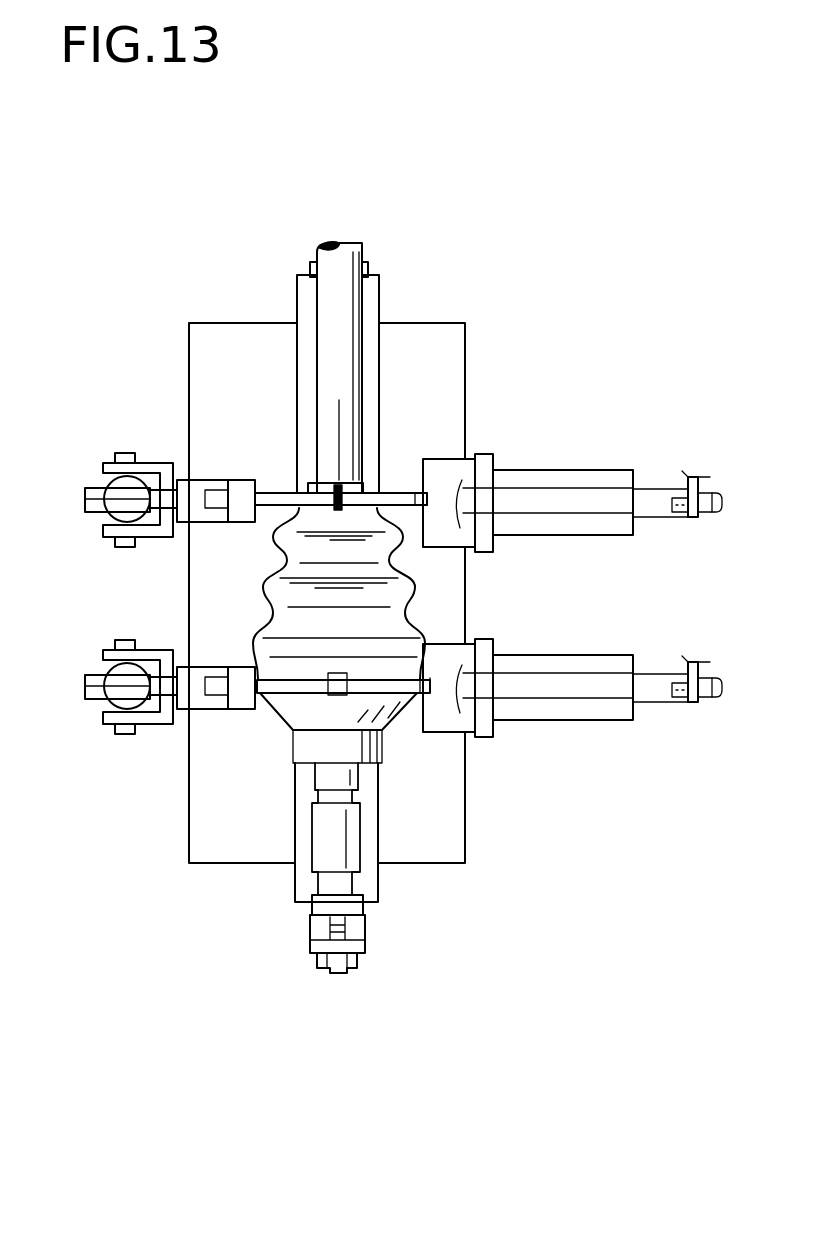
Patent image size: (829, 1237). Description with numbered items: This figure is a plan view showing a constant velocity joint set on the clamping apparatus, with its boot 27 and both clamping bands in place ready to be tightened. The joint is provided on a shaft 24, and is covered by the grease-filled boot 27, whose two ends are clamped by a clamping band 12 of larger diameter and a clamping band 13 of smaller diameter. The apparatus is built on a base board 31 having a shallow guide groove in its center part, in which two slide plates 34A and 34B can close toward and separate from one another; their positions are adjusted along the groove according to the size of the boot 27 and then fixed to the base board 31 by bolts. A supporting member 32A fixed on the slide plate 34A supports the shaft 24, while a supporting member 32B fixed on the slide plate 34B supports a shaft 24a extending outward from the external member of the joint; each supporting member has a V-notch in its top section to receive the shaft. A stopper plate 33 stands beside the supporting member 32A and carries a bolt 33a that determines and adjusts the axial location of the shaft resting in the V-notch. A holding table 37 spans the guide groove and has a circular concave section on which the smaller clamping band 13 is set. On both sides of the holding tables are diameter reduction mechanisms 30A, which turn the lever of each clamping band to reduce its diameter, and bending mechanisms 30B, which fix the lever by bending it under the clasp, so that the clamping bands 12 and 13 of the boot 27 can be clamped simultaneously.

The clamping band 12 is at (293, 683).
The clamping band 13 is at (316, 483).
The shaft 24 is at (350, 240).
The shaft 24a is at (356, 828).
The boot 27 is at (268, 573).
The diameter reduction mechanism 30A is at (80, 458).
The bending mechanism 30B is at (577, 449).
The base board 31 is at (208, 360).
The supporting member 32A is at (364, 907).
The supporting member 32B is at (368, 272).
The stopper plate 33 is at (364, 948).
The bolt 33a is at (340, 975).
The slide plate 34A is at (300, 828).
The slide plate 34B is at (373, 303).
The holding table 37 is at (404, 494).